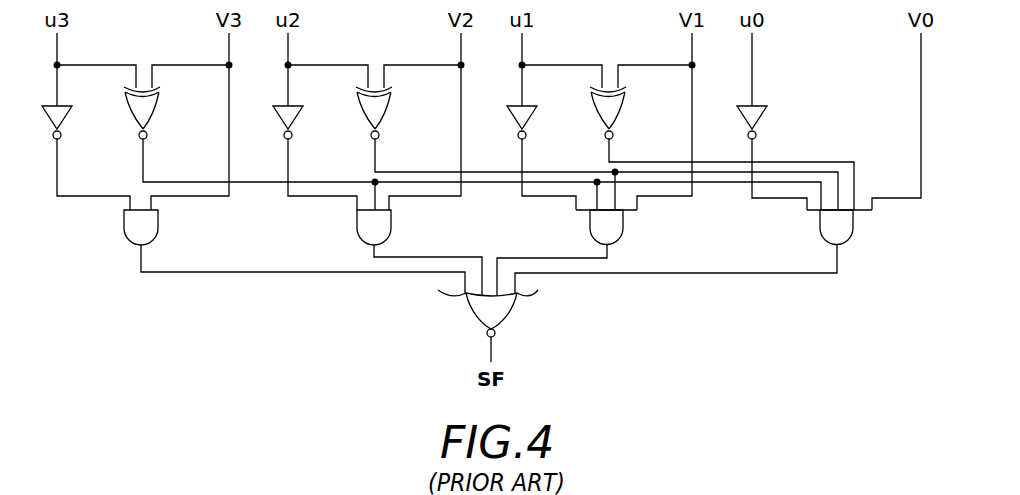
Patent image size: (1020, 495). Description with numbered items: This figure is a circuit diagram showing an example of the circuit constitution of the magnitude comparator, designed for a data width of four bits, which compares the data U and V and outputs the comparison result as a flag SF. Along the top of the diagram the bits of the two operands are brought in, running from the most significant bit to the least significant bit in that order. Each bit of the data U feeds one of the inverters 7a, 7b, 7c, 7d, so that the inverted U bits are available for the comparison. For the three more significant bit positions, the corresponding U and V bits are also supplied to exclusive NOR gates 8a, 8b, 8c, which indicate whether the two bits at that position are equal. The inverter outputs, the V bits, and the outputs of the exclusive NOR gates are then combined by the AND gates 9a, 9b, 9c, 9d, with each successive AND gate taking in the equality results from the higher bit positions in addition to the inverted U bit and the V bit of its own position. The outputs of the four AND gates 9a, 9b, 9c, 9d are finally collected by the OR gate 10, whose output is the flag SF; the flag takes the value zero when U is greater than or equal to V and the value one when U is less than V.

The inverter 7a is at (66, 116).
The inverter 7b is at (297, 116).
The inverter 7c is at (531, 116).
The inverter 7d is at (761, 116).
The exclusive NOR gate 8a is at (156, 110).
The exclusive NOR gate 8b is at (388, 110).
The exclusive NOR gate 8c is at (622, 110).
The AND gate 9a is at (158, 222).
The AND gate 9b is at (391, 222).
The AND gate 9c is at (623, 222).
The AND gate 9d is at (853, 222).
The OR gate 10 is at (510, 308).